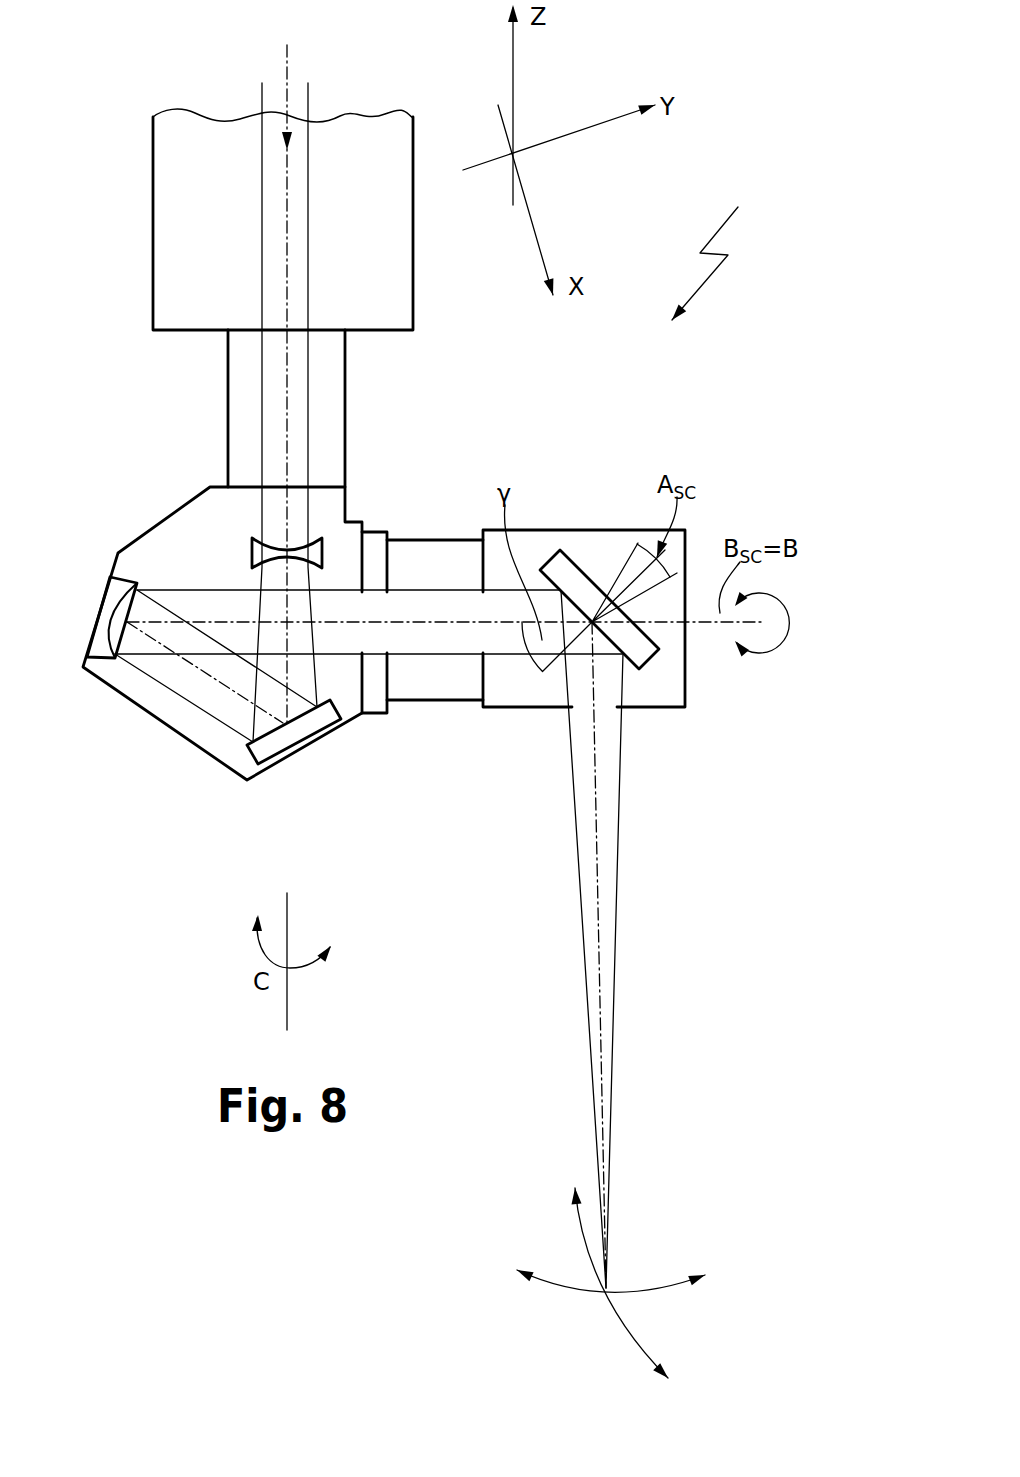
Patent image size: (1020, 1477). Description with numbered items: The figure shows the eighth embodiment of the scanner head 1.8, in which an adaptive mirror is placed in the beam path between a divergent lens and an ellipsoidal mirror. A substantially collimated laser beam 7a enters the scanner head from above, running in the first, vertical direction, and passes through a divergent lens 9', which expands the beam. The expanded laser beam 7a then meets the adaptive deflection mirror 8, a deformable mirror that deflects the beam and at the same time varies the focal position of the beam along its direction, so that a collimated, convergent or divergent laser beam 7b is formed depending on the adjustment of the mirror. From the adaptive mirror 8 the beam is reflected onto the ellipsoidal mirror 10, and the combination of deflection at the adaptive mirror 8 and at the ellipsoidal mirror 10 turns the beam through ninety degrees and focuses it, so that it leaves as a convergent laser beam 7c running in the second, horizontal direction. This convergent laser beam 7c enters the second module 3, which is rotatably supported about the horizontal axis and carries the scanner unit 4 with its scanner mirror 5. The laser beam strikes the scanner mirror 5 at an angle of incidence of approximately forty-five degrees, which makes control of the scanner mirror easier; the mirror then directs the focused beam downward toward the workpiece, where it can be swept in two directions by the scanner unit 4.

The scanner head 1.8 is at (715, 250).
The second module 3 is at (457, 730).
The scanner unit 4 is at (582, 530).
The scanner mirror 5 is at (645, 655).
The collimated laser beam 7a is at (287, 392).
The collimated, convergent or divergent laser beam 7b is at (207, 620).
The convergent laser beam 7c is at (445, 622).
The adaptive deflection mirror 8 is at (307, 747).
The divergent lens 9' is at (325, 518).
The ellipsoidal mirror 10 is at (117, 605).